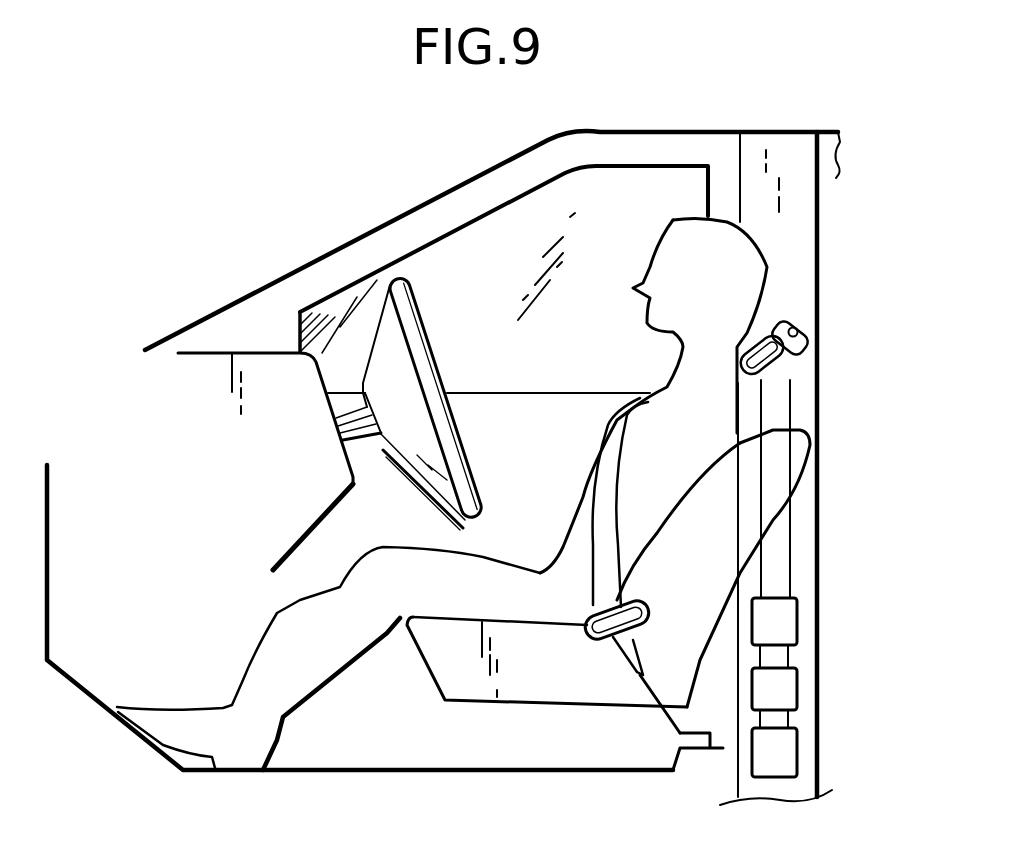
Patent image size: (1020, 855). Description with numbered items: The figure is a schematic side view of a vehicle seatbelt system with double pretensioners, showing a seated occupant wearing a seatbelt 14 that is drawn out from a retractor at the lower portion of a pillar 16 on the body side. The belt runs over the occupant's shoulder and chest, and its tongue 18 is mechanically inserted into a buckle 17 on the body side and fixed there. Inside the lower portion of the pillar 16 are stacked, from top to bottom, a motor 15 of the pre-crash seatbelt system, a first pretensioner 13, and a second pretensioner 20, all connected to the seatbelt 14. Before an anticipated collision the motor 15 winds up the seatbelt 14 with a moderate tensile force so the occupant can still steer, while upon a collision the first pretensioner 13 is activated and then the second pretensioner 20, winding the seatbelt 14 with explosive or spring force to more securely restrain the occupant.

The pretensioner 13 is at (797, 690).
The seatbelt 14 is at (603, 485).
The motor 15 is at (797, 624).
The pillar 16 is at (803, 200).
The buckle 17 is at (622, 660).
The tongue 18 is at (582, 640).
The pretensioner 20 is at (797, 752).